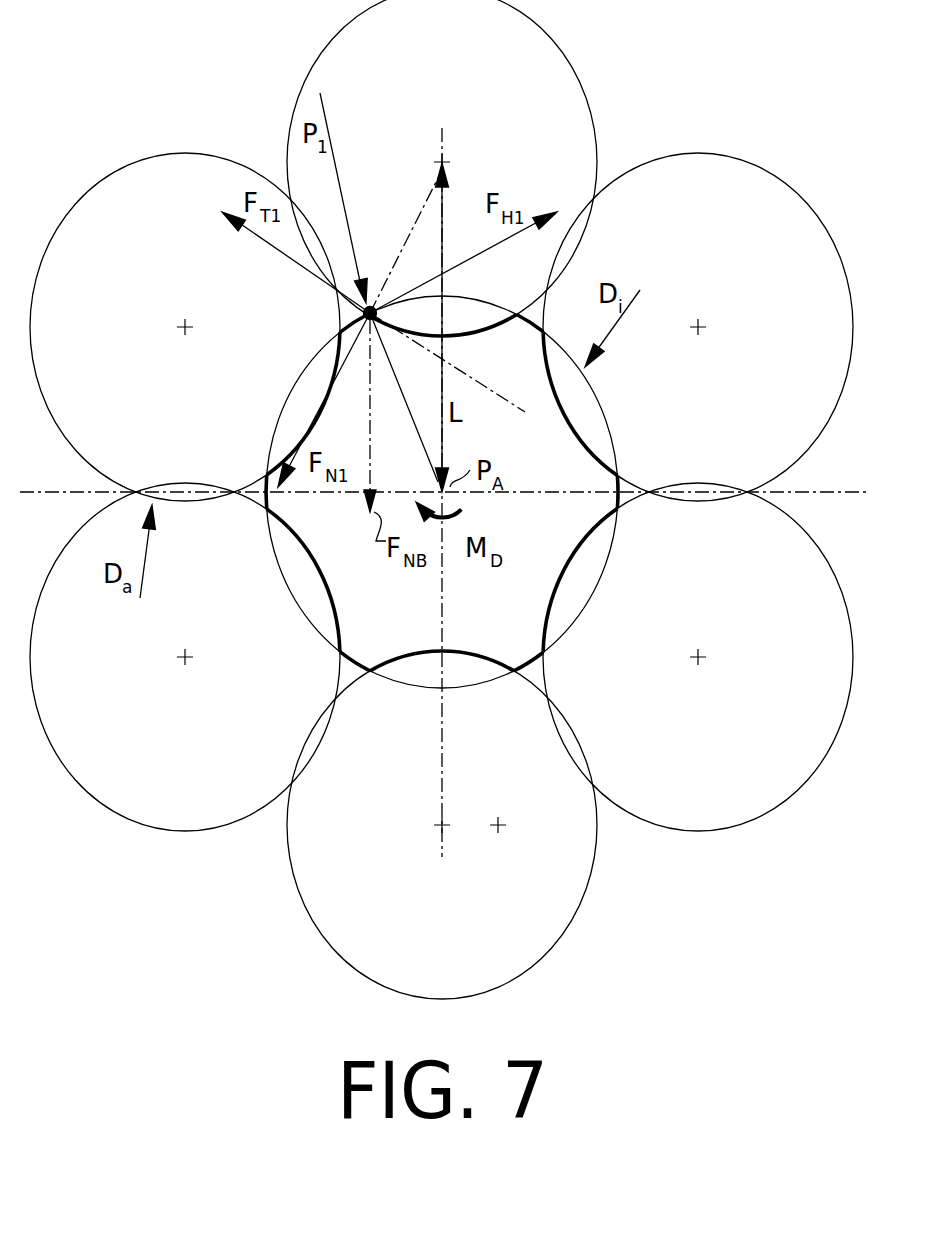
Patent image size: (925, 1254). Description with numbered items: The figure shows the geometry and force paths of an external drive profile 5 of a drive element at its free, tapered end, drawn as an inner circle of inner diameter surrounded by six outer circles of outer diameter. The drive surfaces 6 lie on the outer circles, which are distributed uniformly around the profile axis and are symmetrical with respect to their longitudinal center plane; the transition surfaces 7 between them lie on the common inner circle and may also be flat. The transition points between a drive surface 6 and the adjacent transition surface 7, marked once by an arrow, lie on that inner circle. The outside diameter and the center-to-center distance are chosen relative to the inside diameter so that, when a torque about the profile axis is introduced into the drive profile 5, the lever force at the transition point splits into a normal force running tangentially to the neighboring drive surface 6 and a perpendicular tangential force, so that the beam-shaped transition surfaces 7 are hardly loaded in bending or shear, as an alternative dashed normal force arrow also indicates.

The drive profile 5 is at (522, 586).
The drive surface 6 is at (291, 400).
The transition surface 7 is at (250, 492).